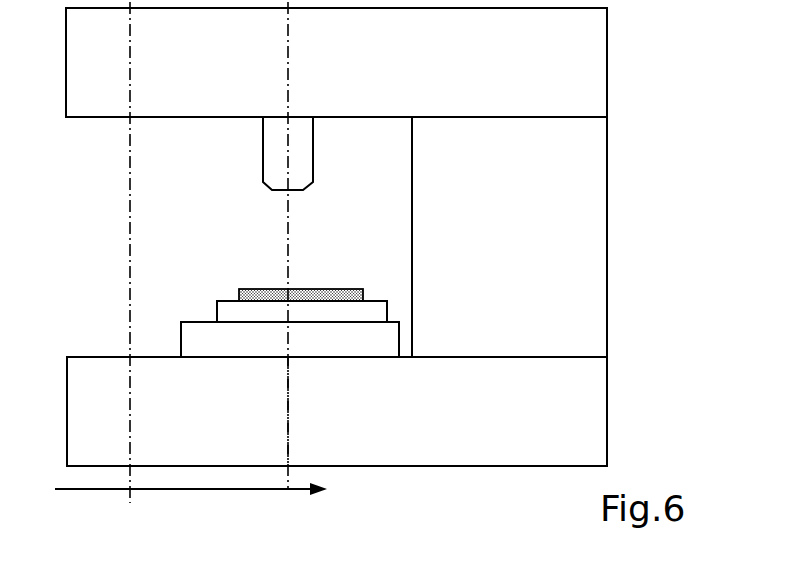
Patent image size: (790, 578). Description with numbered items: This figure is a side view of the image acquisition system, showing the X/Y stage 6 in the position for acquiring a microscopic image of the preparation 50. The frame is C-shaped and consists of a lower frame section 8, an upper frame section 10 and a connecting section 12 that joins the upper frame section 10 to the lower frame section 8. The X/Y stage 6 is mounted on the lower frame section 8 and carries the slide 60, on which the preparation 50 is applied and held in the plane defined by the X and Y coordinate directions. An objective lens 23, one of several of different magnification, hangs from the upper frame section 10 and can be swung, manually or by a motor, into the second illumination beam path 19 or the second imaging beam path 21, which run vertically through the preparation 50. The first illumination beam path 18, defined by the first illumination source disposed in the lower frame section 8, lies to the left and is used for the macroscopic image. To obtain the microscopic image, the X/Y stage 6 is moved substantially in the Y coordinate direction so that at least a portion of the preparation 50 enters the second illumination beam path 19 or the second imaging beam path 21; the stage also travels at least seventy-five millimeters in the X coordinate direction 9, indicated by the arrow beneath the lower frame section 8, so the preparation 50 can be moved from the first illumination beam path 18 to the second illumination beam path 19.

The upper frame section 10 is at (448, 75).
The connecting section 12 is at (547, 234).
The lower frame section 8 is at (556, 428).
The X/Y stage 6 is at (380, 337).
The slide 60 is at (217, 306).
The preparation 50 is at (323, 288).
The objective lens 23 is at (307, 155).
The second imaging beam path 21 is at (287, 62).
The second illumination beam path 19 is at (287, 391).
The first illumination beam path 18 is at (130, 430).
The X coordinate direction 9 is at (87, 490).